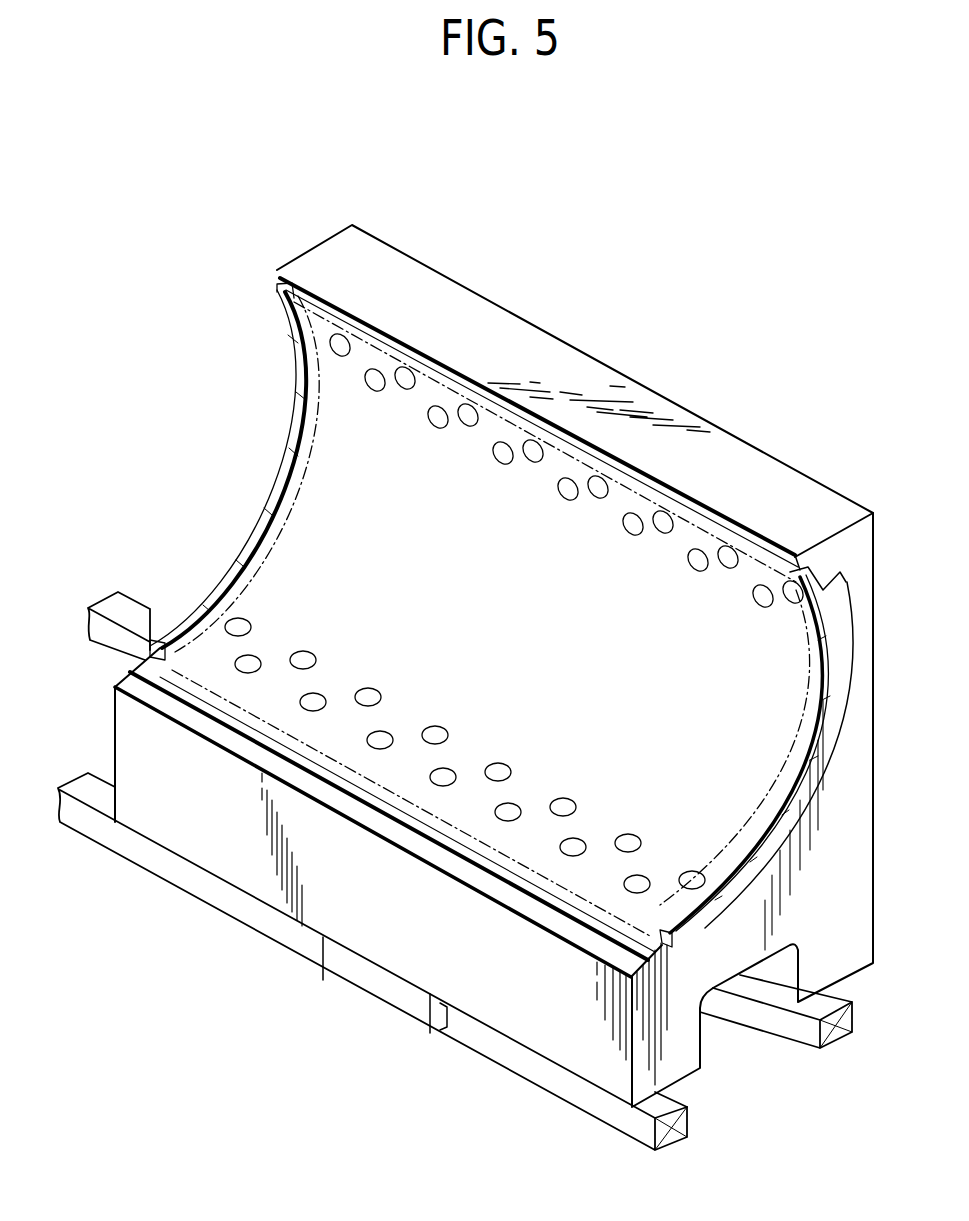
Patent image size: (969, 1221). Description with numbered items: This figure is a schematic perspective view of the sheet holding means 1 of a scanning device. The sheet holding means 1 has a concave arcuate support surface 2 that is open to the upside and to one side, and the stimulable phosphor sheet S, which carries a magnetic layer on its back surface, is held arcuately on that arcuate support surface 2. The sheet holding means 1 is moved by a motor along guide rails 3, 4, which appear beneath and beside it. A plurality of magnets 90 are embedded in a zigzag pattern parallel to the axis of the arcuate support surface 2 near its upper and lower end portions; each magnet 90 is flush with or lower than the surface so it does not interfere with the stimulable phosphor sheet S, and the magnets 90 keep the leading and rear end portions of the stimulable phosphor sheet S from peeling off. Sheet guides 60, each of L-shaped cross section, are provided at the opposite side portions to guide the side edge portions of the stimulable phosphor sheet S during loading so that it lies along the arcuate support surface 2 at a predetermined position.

The sheet holding means 1 is at (583, 341).
The arcuate support surface 2 is at (148, 653).
The guide rail 3 is at (665, 1127).
The guide rail 4 is at (838, 1030).
The sheet guide 60 is at (297, 342).
The magnet 90 is at (378, 378).
The stimulable phosphor sheet S is at (313, 477).